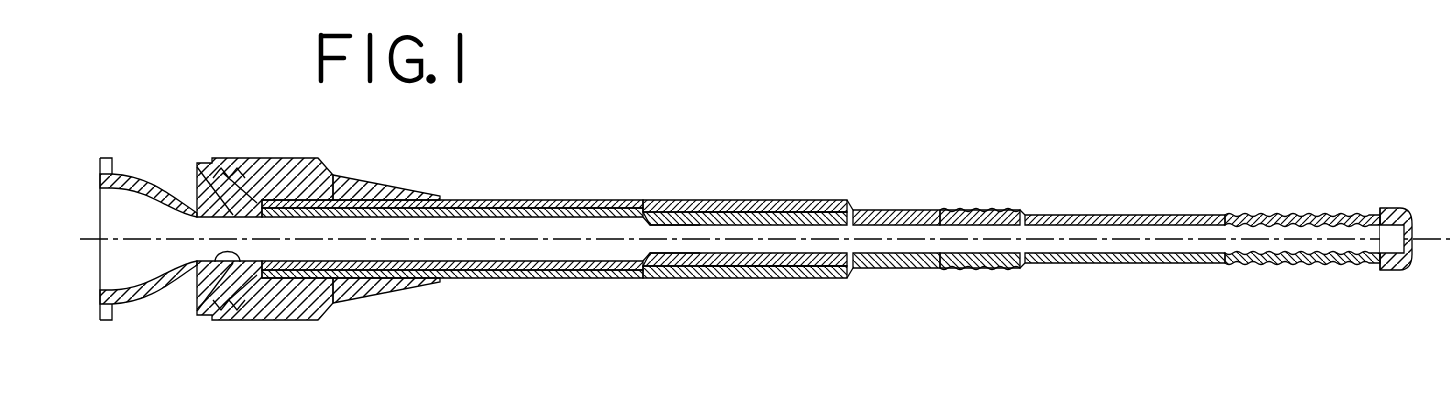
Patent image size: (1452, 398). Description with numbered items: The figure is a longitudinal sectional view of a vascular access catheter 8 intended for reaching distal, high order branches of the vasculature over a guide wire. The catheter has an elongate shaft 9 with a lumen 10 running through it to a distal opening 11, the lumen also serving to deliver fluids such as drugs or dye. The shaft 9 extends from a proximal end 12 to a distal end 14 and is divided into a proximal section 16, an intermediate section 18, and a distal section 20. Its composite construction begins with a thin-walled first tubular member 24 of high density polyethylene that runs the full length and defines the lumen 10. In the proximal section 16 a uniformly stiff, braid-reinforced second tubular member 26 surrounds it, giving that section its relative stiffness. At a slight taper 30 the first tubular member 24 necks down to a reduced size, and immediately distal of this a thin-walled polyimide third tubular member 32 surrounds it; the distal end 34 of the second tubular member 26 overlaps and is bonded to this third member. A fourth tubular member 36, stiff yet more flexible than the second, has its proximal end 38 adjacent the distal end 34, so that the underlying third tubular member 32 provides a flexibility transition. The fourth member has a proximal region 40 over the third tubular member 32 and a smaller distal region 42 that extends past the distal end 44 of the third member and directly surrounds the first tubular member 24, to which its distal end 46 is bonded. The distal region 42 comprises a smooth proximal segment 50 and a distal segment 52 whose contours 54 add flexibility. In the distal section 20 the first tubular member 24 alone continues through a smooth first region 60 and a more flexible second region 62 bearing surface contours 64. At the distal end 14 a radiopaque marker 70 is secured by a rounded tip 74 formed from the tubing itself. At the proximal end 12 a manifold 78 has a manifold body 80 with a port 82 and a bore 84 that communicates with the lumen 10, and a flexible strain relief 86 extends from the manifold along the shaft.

The vascular access catheter 8 is at (649, 112).
The elongate shaft 9 is at (807, 293).
The lumen 10 is at (1110, 260).
The distal opening 11 is at (1412, 238).
The proximal end 12 is at (398, 336).
The distal end 14 is at (1354, 296).
The proximal section 16 is at (440, 160).
The intermediate section 18 is at (1020, 160).
The distal section 20 is at (1025, 160).
The first tubular member 24 is at (598, 275).
The second tubular member 26 is at (505, 278).
The taper 30 is at (620, 275).
The third tubular member 32 is at (760, 275).
The distal end of second tubular member 34 is at (667, 278).
The fourth tubular member 36 is at (778, 275).
The proximal end of fourth tubular member 38 is at (690, 278).
The proximal region 40 is at (683, 200).
The distal region 42 is at (1020, 200).
The distal end of third tubular member 44 is at (838, 278).
The distal end of fourth tubular member 46 is at (1025, 262).
The proximal segment 50 is at (850, 276).
The distal segment 52 is at (1020, 276).
The contours 54 is at (990, 208).
The first region 60 is at (1025, 200).
The second region 62 is at (1385, 200).
The surface contours 64 is at (1268, 262).
The marker 70 is at (1390, 268).
The rounded tip 74 is at (1405, 208).
The manifold 78 is at (194, 329).
The manifold body 80 is at (275, 157).
The port 82 is at (100, 198).
The bore 84 is at (225, 266).
The strain relief 86 is at (372, 175).